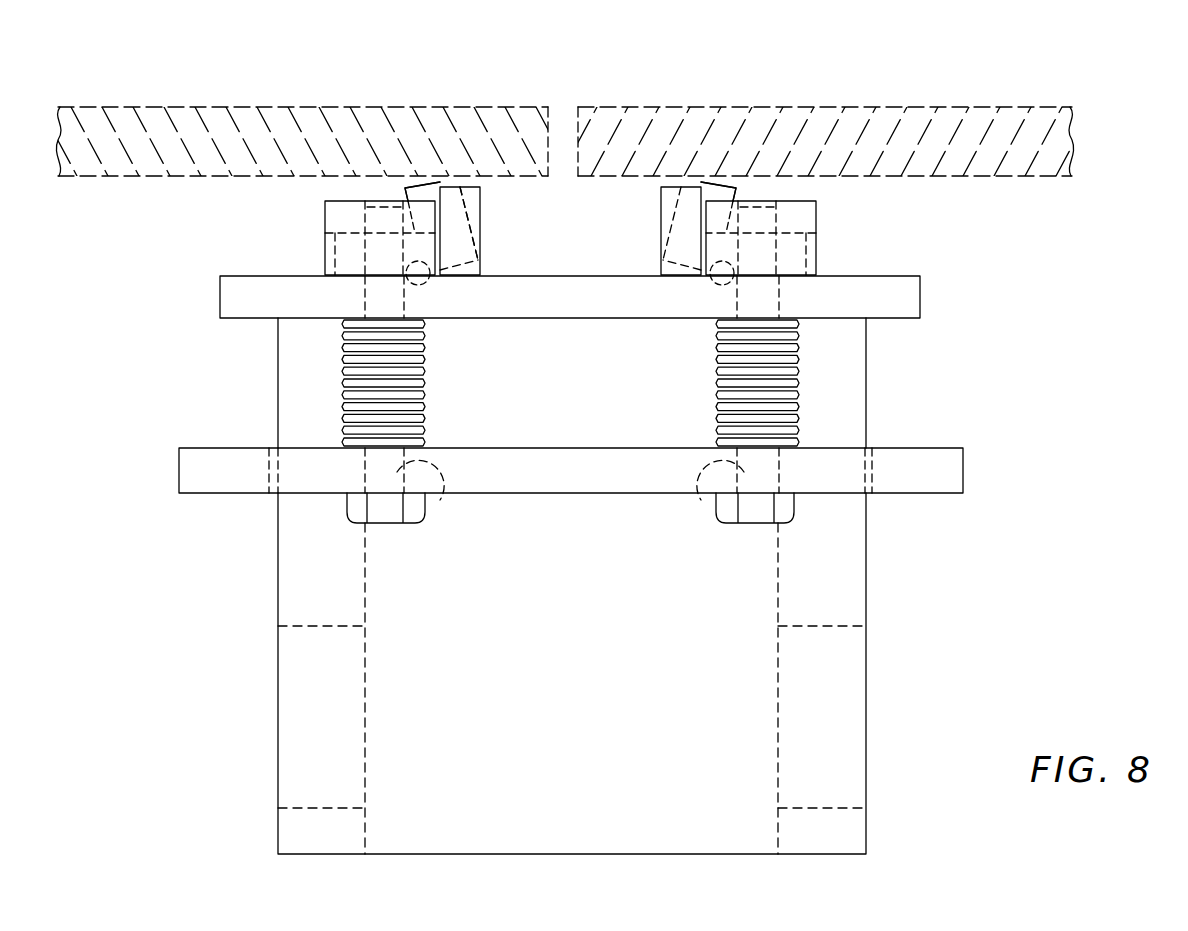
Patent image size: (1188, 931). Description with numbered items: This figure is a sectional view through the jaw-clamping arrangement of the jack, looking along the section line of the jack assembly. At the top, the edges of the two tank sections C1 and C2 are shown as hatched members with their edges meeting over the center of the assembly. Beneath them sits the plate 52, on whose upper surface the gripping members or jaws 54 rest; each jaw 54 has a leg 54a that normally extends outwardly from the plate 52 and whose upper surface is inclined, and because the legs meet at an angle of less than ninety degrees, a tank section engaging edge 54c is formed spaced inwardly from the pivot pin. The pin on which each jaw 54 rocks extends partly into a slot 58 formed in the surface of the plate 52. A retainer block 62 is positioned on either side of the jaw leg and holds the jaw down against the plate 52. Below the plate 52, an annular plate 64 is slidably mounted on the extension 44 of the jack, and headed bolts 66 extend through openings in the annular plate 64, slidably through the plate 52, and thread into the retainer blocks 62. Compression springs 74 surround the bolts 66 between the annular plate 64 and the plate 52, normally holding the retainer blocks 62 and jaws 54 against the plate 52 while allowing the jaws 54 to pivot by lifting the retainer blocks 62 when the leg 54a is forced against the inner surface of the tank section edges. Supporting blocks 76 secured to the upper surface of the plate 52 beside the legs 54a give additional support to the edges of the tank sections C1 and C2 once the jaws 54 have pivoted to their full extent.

The extension 44 is at (293, 593).
The plate 52 is at (233, 297).
The gripping member or jaw 54 is at (400, 195).
The leg 54a is at (425, 195).
The tank section engaging edge 54c is at (460, 177).
The slot 58 is at (422, 285).
The retainer block 62 is at (333, 218).
The annular plate 64 is at (588, 478).
The headed bolt 66 is at (397, 475).
The compression spring 74 is at (347, 367).
The supporting block 76 is at (472, 202).
The tank section C1 is at (127, 105).
The tank section C2 is at (992, 105).